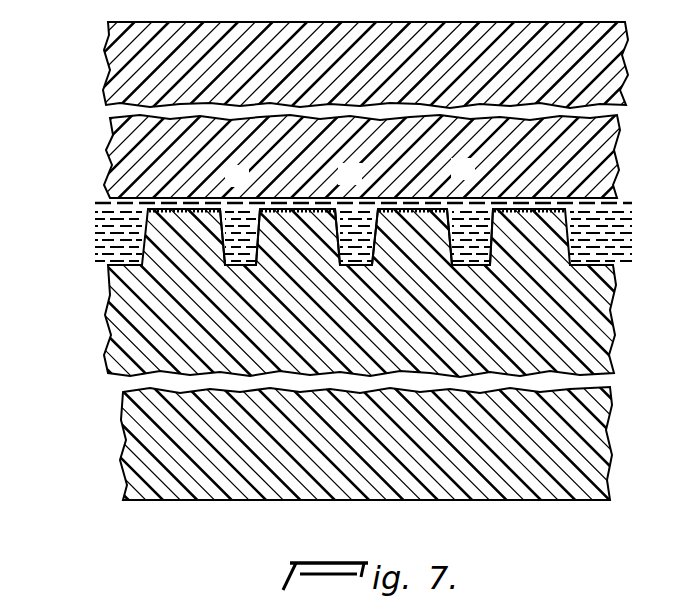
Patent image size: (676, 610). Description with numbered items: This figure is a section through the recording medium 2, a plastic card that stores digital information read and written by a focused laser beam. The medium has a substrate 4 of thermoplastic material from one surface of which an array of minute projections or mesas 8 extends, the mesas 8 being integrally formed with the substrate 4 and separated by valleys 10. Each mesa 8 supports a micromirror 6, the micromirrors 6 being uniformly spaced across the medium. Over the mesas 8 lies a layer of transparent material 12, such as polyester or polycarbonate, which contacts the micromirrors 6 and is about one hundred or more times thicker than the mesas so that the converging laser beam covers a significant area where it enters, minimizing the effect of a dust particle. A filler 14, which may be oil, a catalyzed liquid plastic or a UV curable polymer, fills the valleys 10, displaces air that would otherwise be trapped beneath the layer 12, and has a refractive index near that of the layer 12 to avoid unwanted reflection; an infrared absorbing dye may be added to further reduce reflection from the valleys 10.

The recording medium 2 is at (104, 323).
The substrate 4 is at (153, 500).
The micromirrors 6 is at (147, 216).
The mesa 8 is at (141, 250).
The valleys 10 is at (247, 213).
The layer of transparent material 12 is at (104, 153).
The filler 14 is at (234, 252).